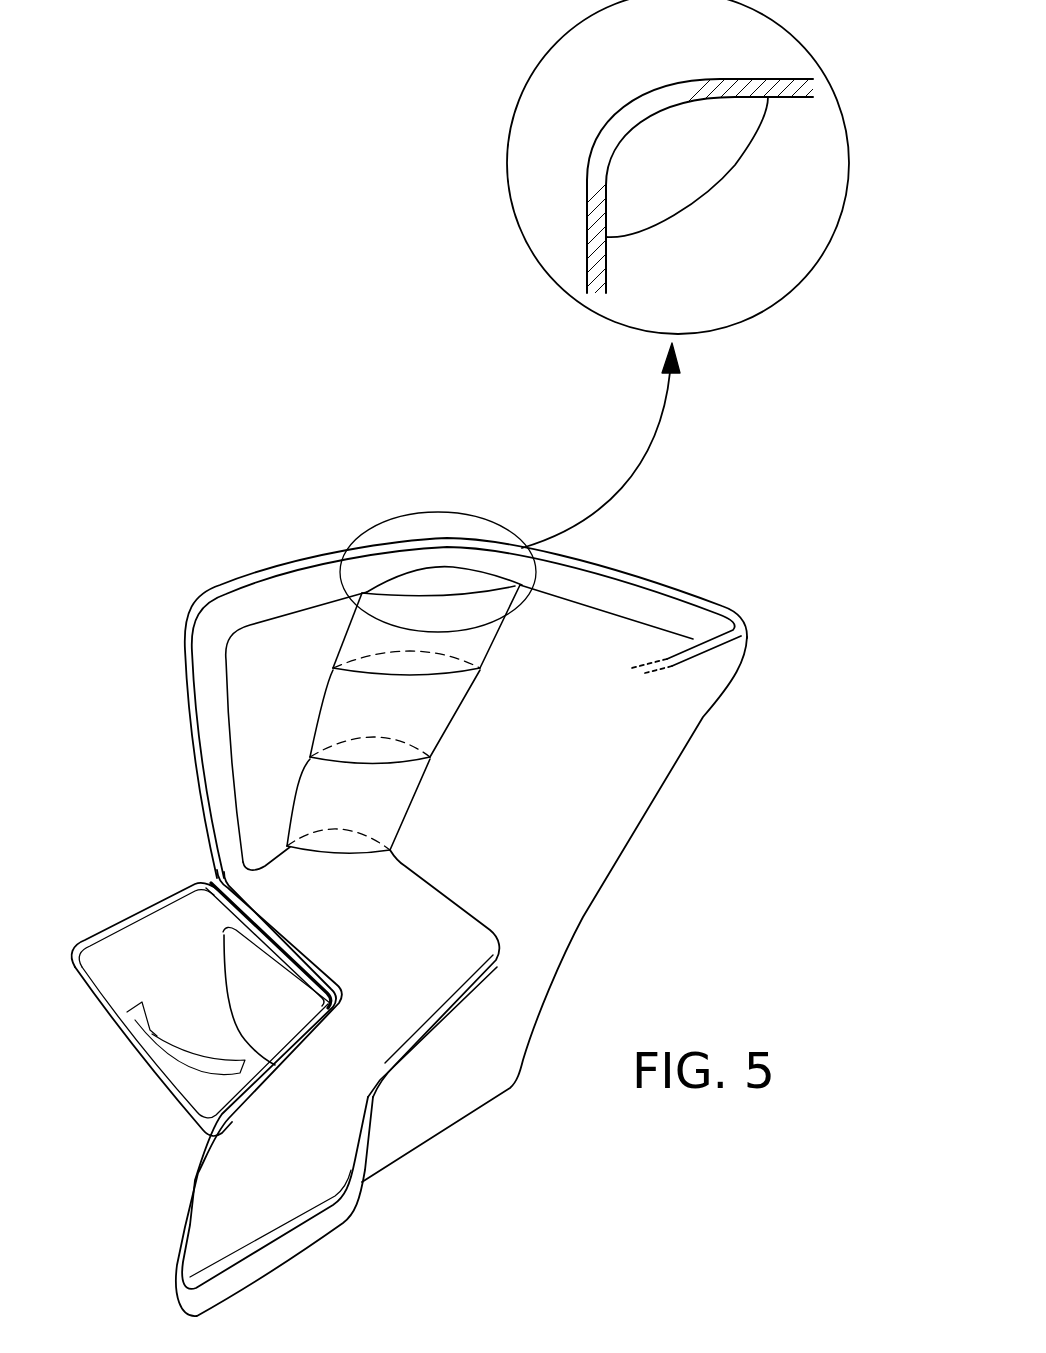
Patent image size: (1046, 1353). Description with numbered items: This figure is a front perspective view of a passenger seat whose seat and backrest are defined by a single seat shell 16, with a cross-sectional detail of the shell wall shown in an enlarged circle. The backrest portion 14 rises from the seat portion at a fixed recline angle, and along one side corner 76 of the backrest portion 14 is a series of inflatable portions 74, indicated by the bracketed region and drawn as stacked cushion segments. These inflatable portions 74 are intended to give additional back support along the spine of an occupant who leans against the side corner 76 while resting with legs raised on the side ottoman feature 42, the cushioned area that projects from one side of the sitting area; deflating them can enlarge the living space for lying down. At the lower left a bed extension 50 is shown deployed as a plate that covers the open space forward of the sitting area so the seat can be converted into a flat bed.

The backrest portion 14 is at (617, 648).
The seat shell 16 is at (590, 168).
The side ottoman feature 42 is at (259, 1192).
The bed extension 50 is at (165, 955).
The inflatable portions 74 is at (686, 168).
The side corner 76 is at (584, 493).